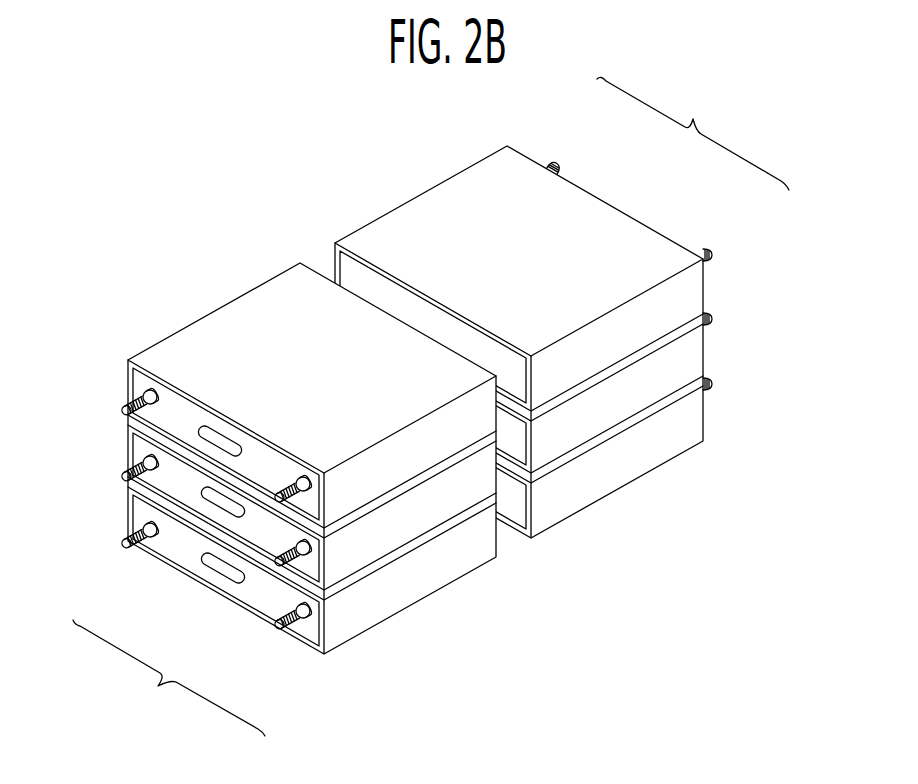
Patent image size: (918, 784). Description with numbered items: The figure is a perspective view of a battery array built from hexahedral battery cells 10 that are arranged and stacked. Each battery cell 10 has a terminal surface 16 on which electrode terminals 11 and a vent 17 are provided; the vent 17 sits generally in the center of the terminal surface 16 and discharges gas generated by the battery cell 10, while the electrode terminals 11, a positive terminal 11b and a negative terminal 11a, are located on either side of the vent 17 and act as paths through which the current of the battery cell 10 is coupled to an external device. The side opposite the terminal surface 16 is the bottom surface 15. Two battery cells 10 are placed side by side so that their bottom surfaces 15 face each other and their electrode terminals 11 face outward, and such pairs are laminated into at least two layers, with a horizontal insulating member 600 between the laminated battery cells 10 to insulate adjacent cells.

The battery cell 10 is at (412, 186).
The electrode terminals 11 is at (431, 406).
The negative terminal 11a is at (128, 541).
The positive terminal 11b is at (279, 628).
The bottom surface 15 is at (513, 502).
The terminal surface 16 is at (314, 627).
The vent 17 is at (215, 440).
The horizontal insulating member 600 is at (143, 428).